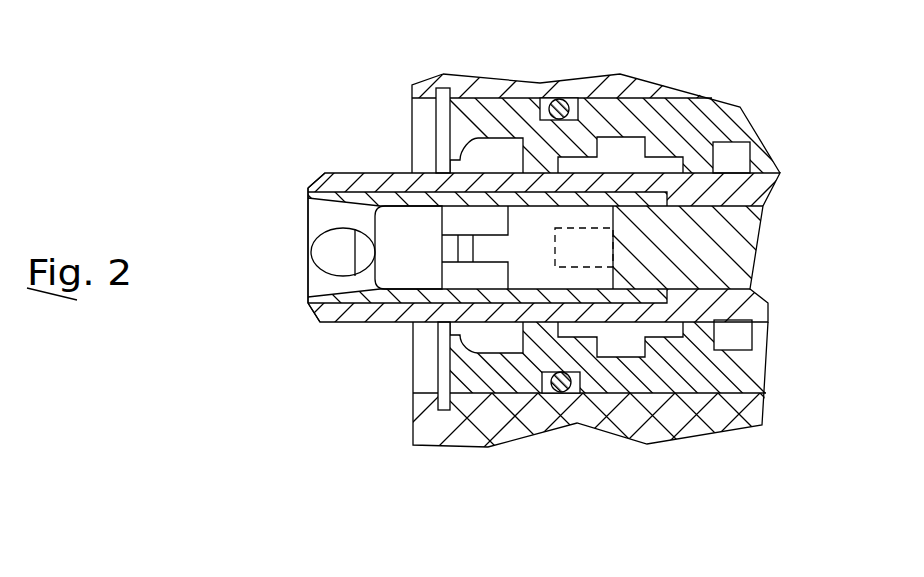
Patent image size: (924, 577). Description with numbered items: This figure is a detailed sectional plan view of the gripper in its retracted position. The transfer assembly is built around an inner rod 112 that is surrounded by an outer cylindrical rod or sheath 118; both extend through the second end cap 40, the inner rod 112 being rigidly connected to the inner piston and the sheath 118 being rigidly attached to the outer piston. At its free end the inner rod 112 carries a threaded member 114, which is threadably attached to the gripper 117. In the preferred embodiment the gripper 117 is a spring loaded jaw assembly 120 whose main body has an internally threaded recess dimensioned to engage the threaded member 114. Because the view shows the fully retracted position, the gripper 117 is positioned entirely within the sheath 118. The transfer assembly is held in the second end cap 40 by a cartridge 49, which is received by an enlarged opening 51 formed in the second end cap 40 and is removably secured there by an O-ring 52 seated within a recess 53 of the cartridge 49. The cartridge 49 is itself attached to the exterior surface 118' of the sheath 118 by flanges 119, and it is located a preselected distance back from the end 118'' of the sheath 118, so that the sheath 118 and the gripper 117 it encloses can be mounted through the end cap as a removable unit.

The second end cap 40 is at (418, 93).
The cartridge 49 is at (742, 375).
The enlarged opening 51 is at (495, 393).
The O-ring 52 is at (547, 92).
The recess 53 is at (528, 88).
The inner rod 112 is at (722, 272).
The threaded member 114 is at (593, 267).
The gripper 117 is at (268, 266).
The sheath 118 is at (526, 220).
The exterior surface 118' is at (533, 248).
The end 118'' is at (256, 257).
The flanges 119 is at (737, 157).
The spring loaded jaw assembly 120 is at (400, 245).